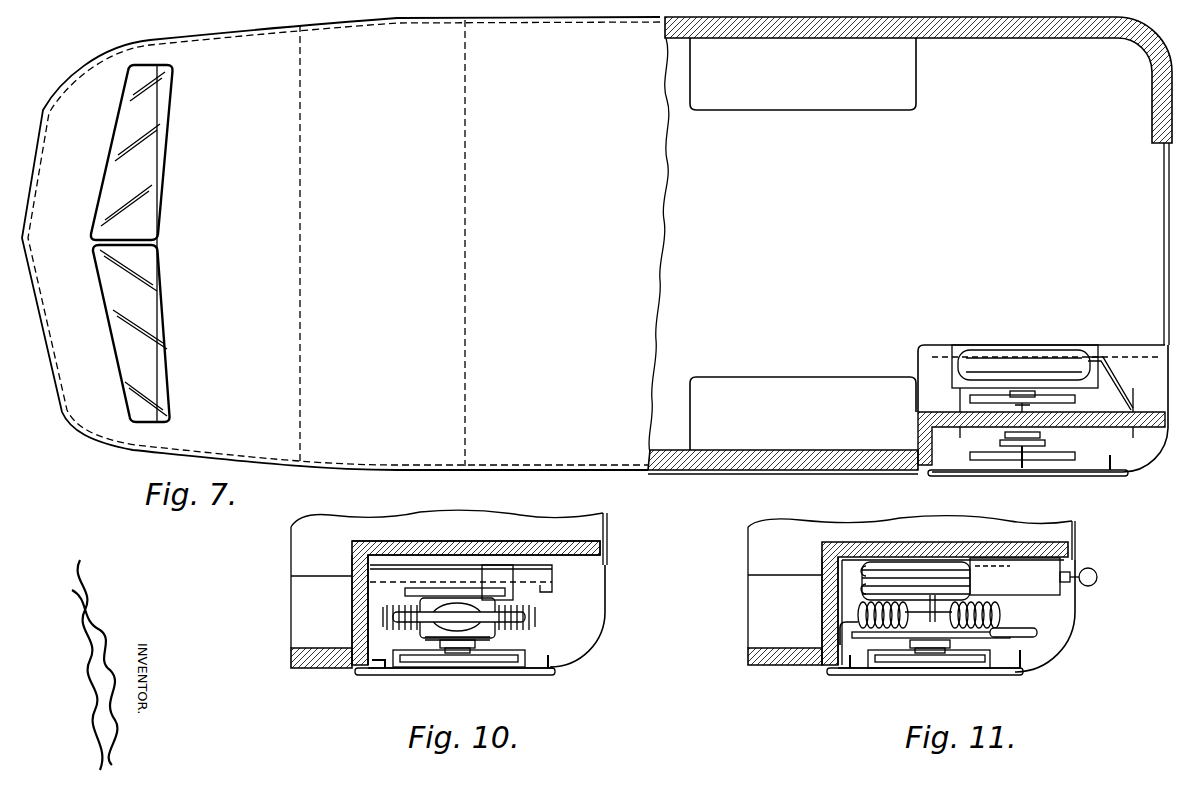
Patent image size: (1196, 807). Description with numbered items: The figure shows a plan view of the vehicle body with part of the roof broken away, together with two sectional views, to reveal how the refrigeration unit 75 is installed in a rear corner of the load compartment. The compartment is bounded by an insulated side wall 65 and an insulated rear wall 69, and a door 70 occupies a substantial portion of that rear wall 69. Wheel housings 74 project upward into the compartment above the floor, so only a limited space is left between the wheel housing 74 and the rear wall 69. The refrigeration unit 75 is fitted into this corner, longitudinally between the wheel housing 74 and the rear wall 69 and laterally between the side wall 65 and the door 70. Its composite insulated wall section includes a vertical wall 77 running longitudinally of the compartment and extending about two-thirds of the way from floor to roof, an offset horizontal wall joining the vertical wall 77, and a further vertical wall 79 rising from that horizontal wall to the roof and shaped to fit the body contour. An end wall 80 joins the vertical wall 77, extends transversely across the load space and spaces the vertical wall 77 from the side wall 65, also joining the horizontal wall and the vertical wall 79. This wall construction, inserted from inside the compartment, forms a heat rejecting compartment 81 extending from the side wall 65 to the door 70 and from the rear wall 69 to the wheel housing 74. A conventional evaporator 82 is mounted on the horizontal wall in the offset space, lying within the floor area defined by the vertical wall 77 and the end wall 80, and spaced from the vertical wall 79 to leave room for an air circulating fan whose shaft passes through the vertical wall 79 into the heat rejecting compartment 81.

In FIG. 7, the insulated side wall 65 is at (722, 466).
In FIG. 10, the insulated side wall 65 is at (326, 666).
In FIG. 11, the insulated side wall 65 is at (772, 666).
In FIG. 7, the insulated rear wall 69 is at (1150, 112).
In FIG. 7, the door 70 is at (1162, 222).
In FIG. 7, the wheel housing 74 is at (768, 101).
In FIG. 7, the refrigeration unit 75 is at (940, 342).
In FIG. 10, the refrigeration unit 75 is at (560, 618).
In FIG. 11, the refrigeration unit 75 is at (1027, 642).
In FIG. 10, the vertical wall 77 is at (530, 543).
In FIG. 11, the vertical wall 77 is at (995, 548).
In FIG. 7, the vertical wall 79 is at (1143, 412).
In FIG. 10, the end wall 80 is at (352, 605).
In FIG. 11, the end wall 80 is at (822, 607).
In FIG. 7, the heat rejecting compartment 81 is at (1130, 455).
In FIG. 10, the heat rejecting compartment 81 is at (580, 645).
In FIG. 11, the heat rejecting compartment 81 is at (1065, 617).
In FIG. 11, the evaporator 82 is at (884, 568).